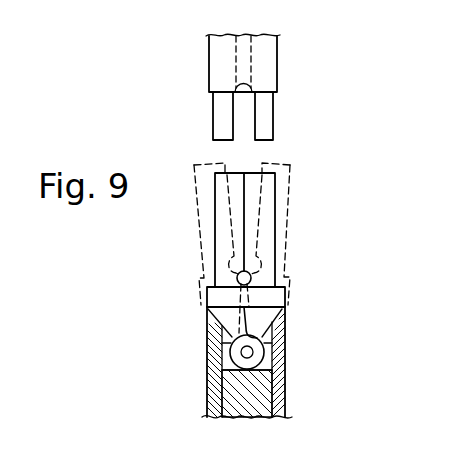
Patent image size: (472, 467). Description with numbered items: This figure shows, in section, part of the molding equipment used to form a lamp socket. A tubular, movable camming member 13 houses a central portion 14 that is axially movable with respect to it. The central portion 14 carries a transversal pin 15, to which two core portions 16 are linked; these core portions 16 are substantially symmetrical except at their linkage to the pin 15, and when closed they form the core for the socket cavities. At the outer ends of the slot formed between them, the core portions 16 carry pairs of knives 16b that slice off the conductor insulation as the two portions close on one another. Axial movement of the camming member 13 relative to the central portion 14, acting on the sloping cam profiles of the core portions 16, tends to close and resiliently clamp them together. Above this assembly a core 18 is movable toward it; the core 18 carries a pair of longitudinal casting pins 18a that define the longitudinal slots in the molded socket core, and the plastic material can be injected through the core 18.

The core 18 is at (267, 60).
The longitudinal casting pins 18a is at (226, 117).
The core portions 16 is at (238, 212).
The knives 16b is at (251, 279).
The movable camming member 13 is at (285, 323).
The transversal pin 15 is at (253, 352).
The central portion 14 is at (270, 395).